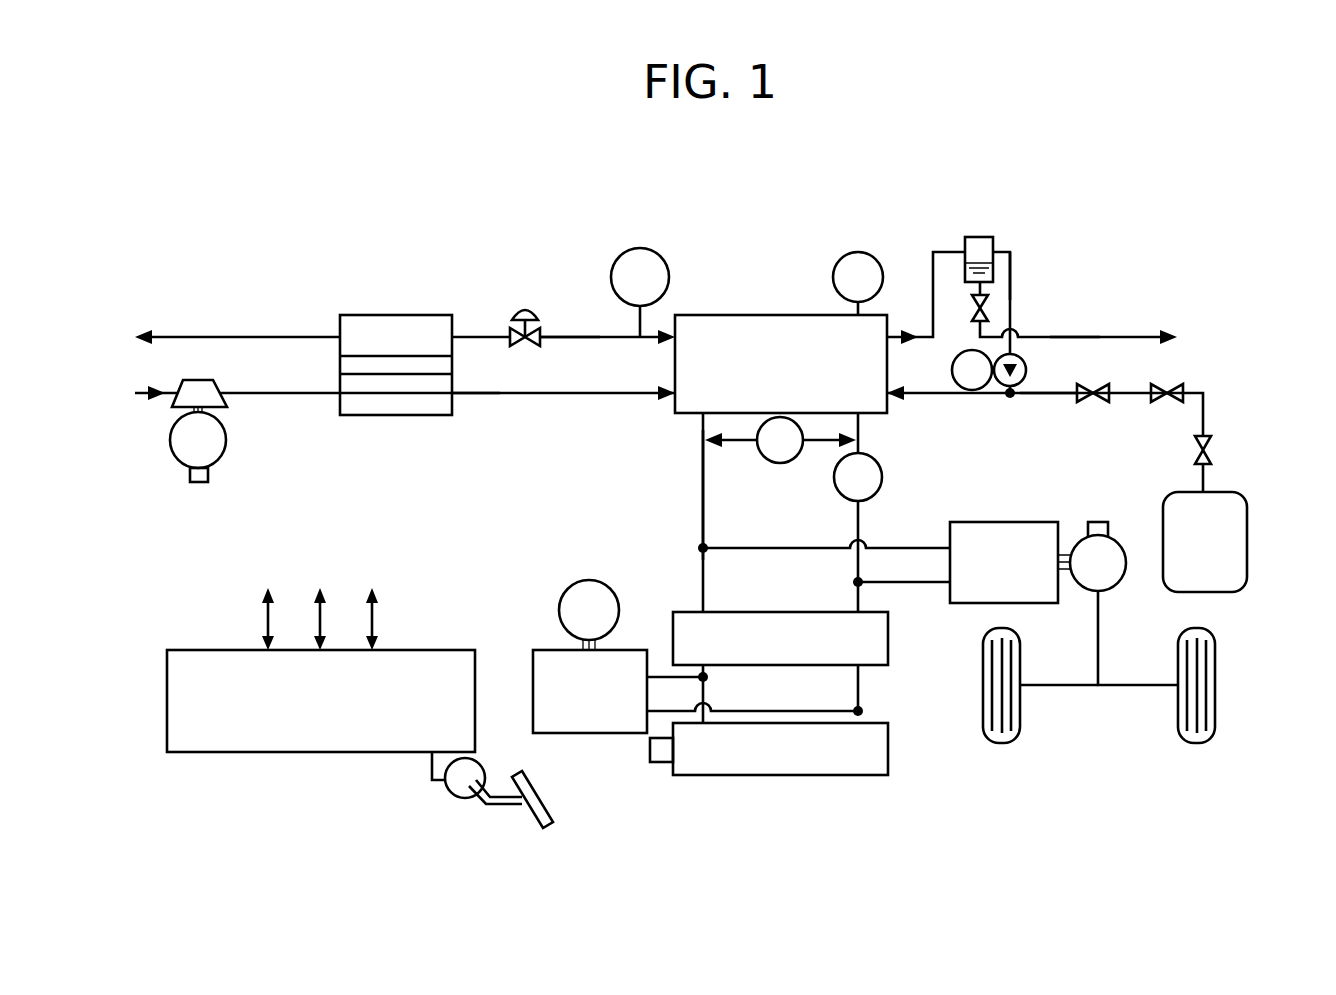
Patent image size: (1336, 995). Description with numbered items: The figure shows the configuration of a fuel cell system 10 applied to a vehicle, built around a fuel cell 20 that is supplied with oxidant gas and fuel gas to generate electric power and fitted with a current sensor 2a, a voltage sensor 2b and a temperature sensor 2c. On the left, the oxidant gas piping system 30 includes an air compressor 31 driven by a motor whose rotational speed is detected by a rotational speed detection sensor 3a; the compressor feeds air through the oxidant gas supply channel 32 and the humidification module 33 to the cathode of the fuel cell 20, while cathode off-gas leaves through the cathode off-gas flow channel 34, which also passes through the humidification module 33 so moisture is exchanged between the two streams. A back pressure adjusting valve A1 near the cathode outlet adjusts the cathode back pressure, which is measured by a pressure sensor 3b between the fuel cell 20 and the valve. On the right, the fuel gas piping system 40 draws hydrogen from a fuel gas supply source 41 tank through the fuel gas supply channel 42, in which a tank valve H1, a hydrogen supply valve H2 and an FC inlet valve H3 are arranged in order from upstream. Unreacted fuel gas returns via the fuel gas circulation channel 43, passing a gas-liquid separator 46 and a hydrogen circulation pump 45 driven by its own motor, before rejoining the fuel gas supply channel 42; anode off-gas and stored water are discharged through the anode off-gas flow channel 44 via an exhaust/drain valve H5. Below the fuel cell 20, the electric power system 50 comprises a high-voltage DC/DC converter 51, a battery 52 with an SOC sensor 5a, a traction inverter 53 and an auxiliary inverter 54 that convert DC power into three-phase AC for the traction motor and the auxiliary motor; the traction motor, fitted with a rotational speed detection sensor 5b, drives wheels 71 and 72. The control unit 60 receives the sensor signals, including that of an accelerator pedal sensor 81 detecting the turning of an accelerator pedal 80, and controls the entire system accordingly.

The fuel cell system 10 is at (815, 186).
The fuel cell stack 20 is at (722, 315).
The current sensor 2a is at (883, 470).
The voltage sensor 2b is at (771, 463).
The temperature sensor 2c is at (835, 282).
The rotational speed detection sensor 3a is at (198, 483).
The pressure sensor 3b is at (665, 262).
The oxidant gas piping system 30 is at (349, 432).
The air compressor 31 is at (226, 400).
The oxidant gas supply channel 32 is at (485, 394).
The humidification module 33 is at (427, 416).
The cathode off-gas flow channel 34 is at (572, 337).
The back pressure adjusting valve A1 is at (525, 305).
The fuel gas piping system 40 is at (1040, 408).
The fuel gas supply source 41 is at (1163, 525).
The fuel gas supply channel 42 is at (1014, 398).
The fuel gas circulation channel 43 is at (1010, 293).
The anode off-gas flow channel 44 is at (1118, 337).
The hydrogen circulation pump 45 is at (1024, 374).
The gas-liquid separator 46 is at (965, 240).
The tank valve H1 is at (1222, 450).
The hydrogen supply valve H2 is at (1167, 409).
The FC inlet valve H3 is at (1093, 409).
The exhaust/drain valve H5 is at (963, 308).
The electric power system 50 is at (668, 592).
The high-voltage DC/DC converter 51 is at (784, 612).
The battery 52 is at (796, 776).
The traction inverter 53 is at (985, 522).
The auxiliary inverter 54 is at (548, 650).
The SOC sensor 5a is at (660, 763).
The rotational speed detection sensor 5b is at (1096, 522).
The control unit 60 is at (192, 650).
The wheel 71 is at (996, 744).
The wheel 72 is at (1193, 744).
The accelerator pedal 80 is at (542, 794).
The accelerator pedal sensor 81 is at (485, 764).